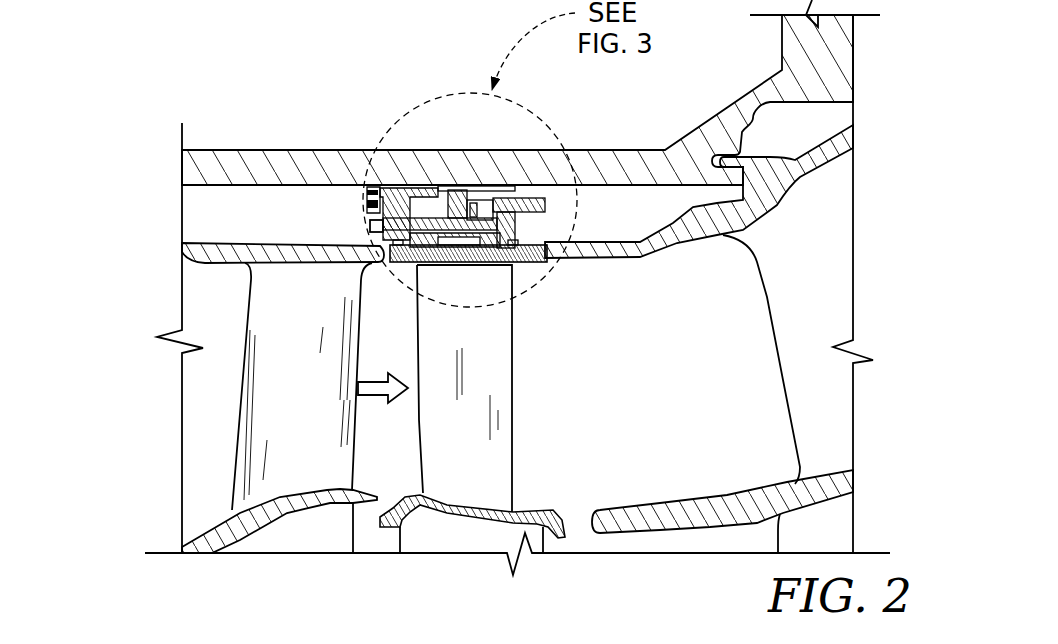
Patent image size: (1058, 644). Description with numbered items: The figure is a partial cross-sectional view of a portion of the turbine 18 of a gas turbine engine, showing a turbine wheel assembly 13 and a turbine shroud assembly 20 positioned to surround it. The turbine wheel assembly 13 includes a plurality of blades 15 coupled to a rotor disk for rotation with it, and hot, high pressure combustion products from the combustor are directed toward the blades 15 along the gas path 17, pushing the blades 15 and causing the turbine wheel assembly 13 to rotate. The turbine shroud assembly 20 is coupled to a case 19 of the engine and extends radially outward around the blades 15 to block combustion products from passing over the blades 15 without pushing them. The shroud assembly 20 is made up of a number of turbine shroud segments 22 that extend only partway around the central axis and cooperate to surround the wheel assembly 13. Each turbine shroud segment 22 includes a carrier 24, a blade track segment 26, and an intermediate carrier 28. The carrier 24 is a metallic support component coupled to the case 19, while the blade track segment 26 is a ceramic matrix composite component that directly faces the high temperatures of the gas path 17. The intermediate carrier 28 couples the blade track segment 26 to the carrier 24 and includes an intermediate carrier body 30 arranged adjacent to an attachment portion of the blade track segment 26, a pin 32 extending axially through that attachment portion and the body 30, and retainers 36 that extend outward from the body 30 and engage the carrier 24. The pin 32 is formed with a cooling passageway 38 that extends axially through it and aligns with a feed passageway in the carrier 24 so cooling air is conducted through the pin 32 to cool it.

The turbine wheel assembly 13 is at (576, 381).
The blades 15 is at (518, 440).
The gas path 17 is at (398, 369).
The turbine 18 is at (244, 90).
The case 19 is at (225, 146).
The turbine shroud assembly 20 is at (585, 202).
The turbine shroud segment 22 is at (356, 193).
The carrier 24 is at (388, 180).
The blade track segment 26 is at (487, 276).
The intermediate carrier 28 is at (407, 211).
The intermediate carrier body 30 is at (475, 210).
The pin 32 is at (405, 222).
The retainers 36 is at (457, 185).
The cooling passageway 38 is at (510, 225).